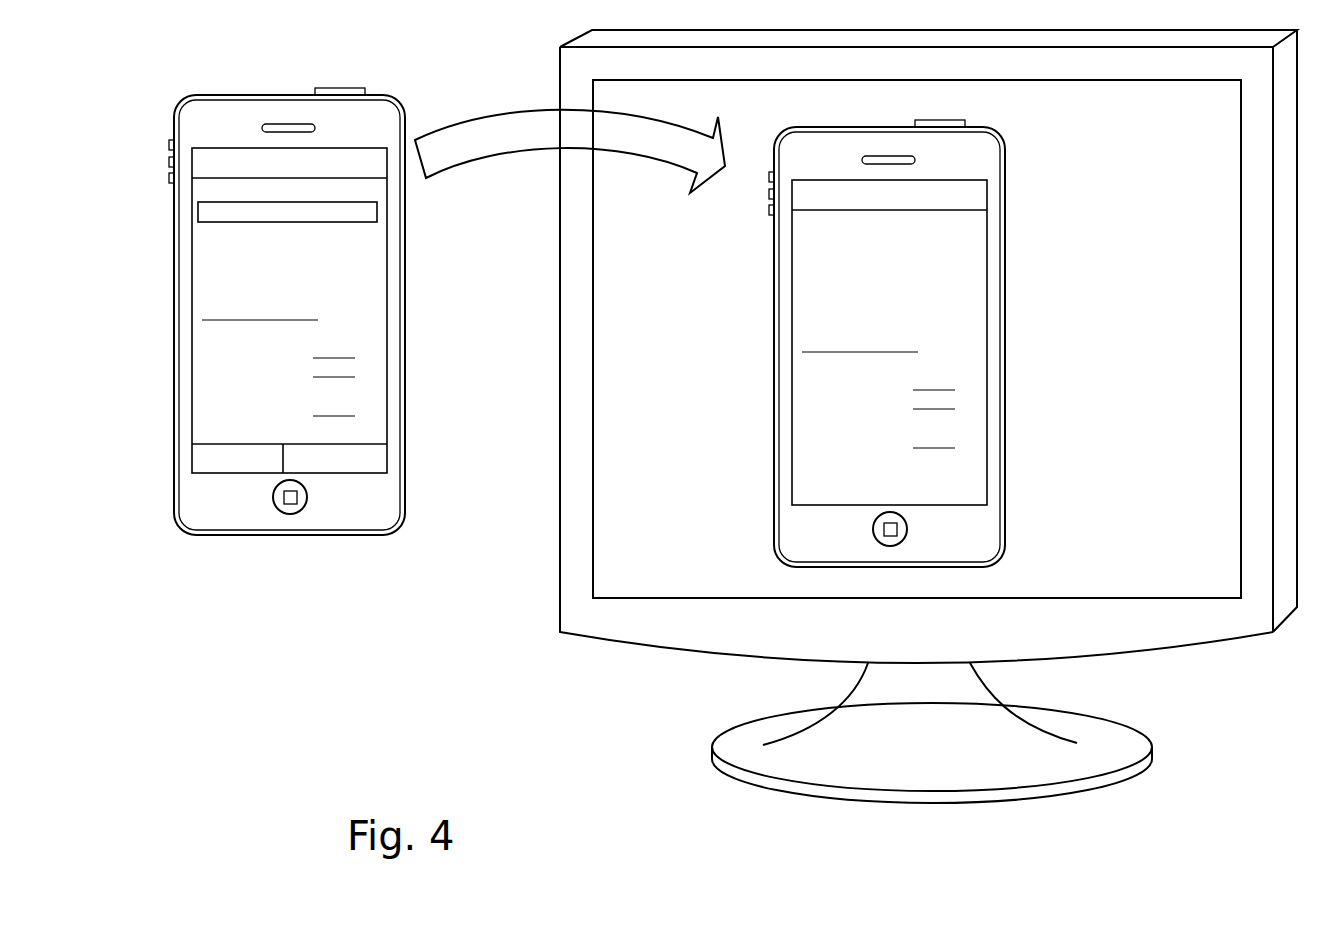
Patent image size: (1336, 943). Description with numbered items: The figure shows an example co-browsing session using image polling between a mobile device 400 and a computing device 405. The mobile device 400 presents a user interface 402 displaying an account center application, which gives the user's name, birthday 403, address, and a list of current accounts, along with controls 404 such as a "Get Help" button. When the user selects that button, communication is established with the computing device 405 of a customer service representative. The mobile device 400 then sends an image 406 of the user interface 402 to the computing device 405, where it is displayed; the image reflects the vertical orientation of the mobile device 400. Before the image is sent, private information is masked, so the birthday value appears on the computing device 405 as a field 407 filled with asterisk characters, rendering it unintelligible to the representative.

The mobile device 400 is at (270, 95).
The user interface 402 is at (363, 290).
The birthday 403 is at (380, 217).
The help and disconnect buttons 404 is at (380, 460).
The computing device 405 is at (560, 552).
The image 406 is at (1008, 379).
The field 407 is at (967, 240).